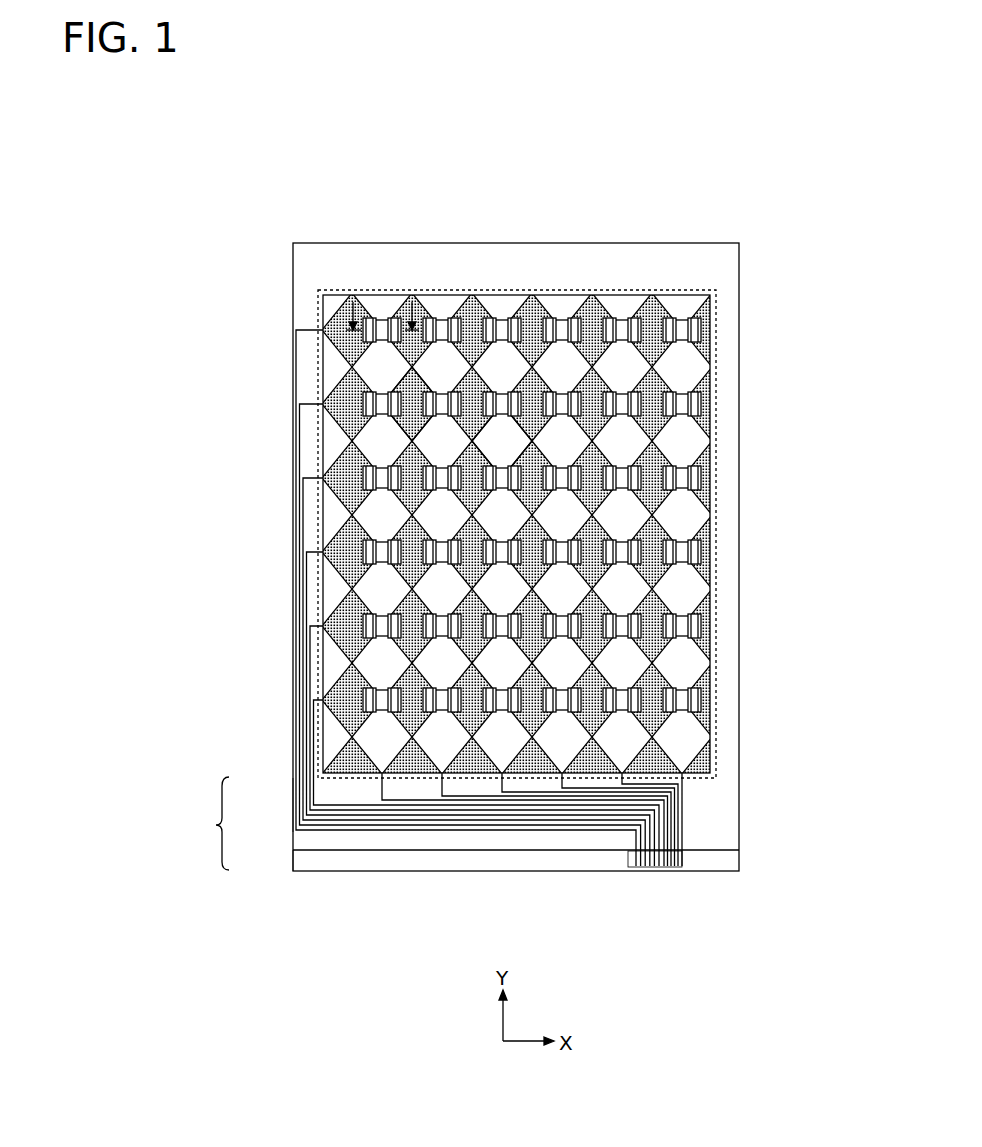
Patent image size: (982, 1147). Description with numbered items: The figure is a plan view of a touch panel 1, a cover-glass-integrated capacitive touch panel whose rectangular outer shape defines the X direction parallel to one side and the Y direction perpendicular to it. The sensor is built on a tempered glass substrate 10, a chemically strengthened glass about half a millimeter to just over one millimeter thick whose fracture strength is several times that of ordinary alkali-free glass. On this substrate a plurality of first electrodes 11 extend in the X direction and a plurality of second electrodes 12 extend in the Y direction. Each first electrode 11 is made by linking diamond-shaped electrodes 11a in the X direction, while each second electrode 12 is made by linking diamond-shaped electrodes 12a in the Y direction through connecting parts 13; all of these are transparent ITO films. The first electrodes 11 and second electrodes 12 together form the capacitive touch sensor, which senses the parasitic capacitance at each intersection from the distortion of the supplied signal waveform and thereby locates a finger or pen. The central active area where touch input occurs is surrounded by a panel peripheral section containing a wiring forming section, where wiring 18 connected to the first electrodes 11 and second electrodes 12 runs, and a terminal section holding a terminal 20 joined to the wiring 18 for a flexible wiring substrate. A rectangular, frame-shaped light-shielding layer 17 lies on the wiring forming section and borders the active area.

The touch panel 1 is at (783, 231).
The tempered glass substrate 10 is at (742, 290).
The first electrodes 11 is at (402, 302).
The diamond-shaped electrodes 11a is at (407, 375).
The second electrodes 12 is at (565, 372).
The diamond-shaped electrodes 12a is at (493, 440).
The connecting parts 13 is at (620, 333).
The light-shielding layer 17 is at (718, 815).
The wiring 18 is at (296, 606).
The terminal 20 is at (678, 858).